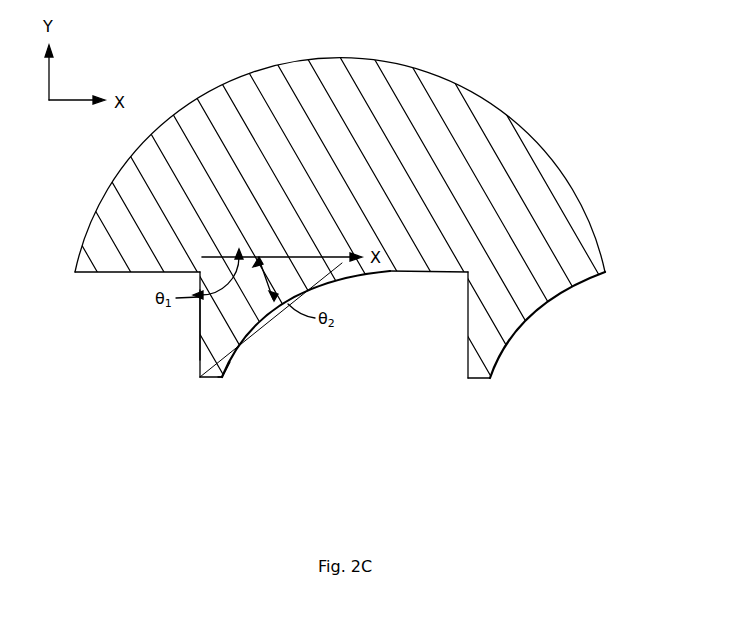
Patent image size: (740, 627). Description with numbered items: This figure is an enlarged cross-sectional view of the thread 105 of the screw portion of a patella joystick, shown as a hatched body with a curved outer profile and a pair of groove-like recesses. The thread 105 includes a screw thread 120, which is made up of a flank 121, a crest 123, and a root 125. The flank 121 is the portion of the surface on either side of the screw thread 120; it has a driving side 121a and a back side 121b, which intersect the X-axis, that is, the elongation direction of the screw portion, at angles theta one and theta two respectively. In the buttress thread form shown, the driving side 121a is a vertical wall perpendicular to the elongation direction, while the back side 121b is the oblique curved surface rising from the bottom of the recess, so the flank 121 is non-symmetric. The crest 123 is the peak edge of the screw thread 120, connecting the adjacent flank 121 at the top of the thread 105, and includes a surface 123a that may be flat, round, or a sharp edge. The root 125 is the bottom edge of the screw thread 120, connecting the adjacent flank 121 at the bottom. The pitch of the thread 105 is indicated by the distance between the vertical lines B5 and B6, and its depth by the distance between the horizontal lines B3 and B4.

The thread 105 is at (538, 425).
The screw thread 120 is at (227, 372).
The flank 121 is at (200, 316).
The driving side 121a is at (200, 343).
The back side 121b is at (247, 336).
The crest 123 is at (208, 378).
The surface 123a is at (211, 380).
The root 125 is at (447, 275).
The line B3 is at (608, 272).
The line B4 is at (500, 378).
The line B5 is at (200, 380).
The line B6 is at (468, 380).